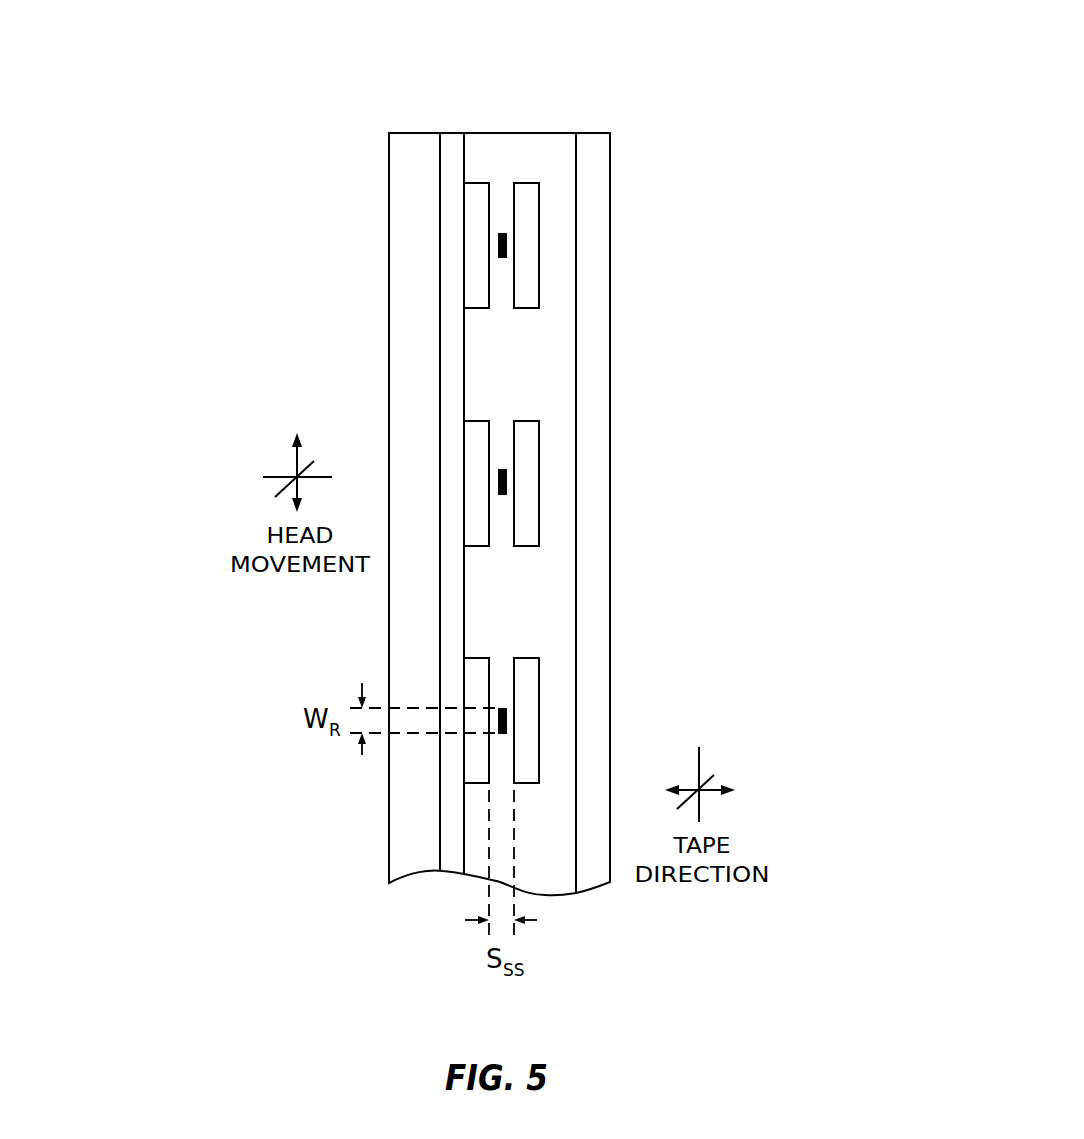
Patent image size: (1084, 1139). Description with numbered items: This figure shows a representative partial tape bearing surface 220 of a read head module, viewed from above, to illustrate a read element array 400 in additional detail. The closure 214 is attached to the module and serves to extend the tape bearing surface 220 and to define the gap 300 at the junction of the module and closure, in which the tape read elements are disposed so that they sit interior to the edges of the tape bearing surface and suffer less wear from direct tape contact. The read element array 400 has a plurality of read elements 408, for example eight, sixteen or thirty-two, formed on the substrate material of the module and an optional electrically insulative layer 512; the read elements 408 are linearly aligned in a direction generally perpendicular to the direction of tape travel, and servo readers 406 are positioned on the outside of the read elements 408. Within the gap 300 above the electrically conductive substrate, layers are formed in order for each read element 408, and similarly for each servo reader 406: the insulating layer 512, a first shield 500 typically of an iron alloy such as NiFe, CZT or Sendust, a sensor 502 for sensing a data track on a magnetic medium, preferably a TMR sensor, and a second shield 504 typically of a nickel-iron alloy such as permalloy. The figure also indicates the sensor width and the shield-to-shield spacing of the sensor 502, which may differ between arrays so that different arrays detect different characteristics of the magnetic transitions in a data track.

The read element array 400 is at (512, 98).
The gap 300 is at (552, 133).
The closure 214 is at (610, 160).
The tape bearing surface 220 is at (389, 168).
The electrically insulative layer 512 is at (440, 226).
The servo readers 406 is at (636, 238).
The read elements 408 is at (637, 475).
The first shield 500 is at (473, 421).
The sensor 502 is at (502, 469).
The second shield 504 is at (535, 421).